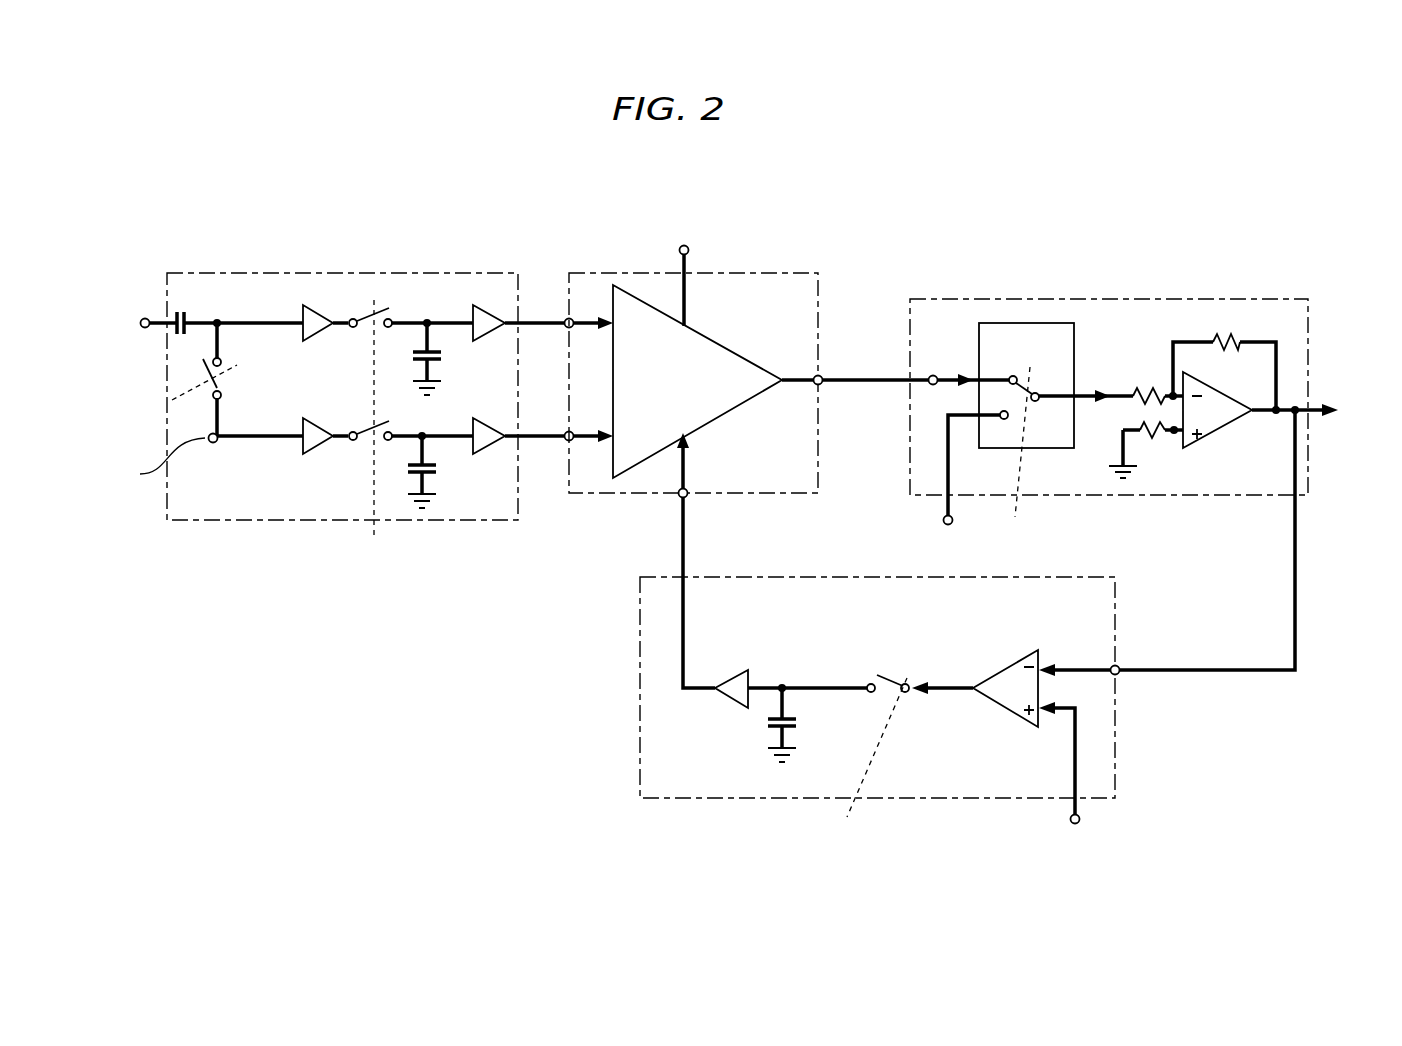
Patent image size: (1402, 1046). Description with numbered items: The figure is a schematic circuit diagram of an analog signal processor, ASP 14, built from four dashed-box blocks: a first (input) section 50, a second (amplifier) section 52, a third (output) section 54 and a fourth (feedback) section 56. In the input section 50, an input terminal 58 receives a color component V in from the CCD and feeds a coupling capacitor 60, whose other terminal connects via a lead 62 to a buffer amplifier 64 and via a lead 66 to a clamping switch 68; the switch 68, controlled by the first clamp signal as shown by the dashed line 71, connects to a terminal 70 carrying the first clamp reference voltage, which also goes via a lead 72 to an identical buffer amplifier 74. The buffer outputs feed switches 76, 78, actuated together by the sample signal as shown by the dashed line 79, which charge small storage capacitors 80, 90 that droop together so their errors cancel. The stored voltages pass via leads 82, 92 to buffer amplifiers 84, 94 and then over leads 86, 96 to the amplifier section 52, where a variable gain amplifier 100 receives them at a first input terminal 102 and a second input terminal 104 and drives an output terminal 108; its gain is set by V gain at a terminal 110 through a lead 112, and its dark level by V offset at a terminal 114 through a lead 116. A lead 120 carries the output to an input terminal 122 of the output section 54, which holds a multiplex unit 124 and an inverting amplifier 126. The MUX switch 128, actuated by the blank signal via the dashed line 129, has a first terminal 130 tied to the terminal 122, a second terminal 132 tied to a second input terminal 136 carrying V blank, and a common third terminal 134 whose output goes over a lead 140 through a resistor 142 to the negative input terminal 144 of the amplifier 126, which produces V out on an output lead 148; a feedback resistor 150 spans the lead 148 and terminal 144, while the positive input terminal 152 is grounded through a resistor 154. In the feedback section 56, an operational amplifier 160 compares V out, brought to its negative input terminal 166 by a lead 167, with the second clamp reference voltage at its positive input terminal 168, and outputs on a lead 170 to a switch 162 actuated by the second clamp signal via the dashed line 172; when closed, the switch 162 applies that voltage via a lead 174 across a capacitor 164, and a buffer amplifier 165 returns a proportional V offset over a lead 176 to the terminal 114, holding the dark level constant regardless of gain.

The analog signal processor 14 is at (474, 166).
The first (input) section 50 is at (222, 273).
The second (amplifier) section 52 is at (808, 273).
The third (output) section 54 is at (1080, 299).
The fourth (feedback) section 56 is at (1118, 623).
The input terminal 58 is at (142, 316).
The coupling capacitor 60 is at (184, 312).
The lead 62 is at (275, 320).
The buffer amplifier 64 is at (316, 305).
The lead 66 is at (222, 340).
The clamping switch 68 is at (223, 383).
The terminal 70 is at (213, 444).
The dashed line 71 is at (234, 366).
The lead 72 is at (263, 440).
The buffer amplifier 74 is at (316, 420).
The switch 76 is at (389, 306).
The switch 78 is at (388, 420).
The dashed line 79 is at (374, 363).
The storage capacitor 80 is at (441, 356).
The lead 82 is at (445, 318).
The buffer amplifier 84 is at (487, 305).
The lead 86 is at (535, 321).
The storage capacitor 90 is at (436, 470).
The lead 92 is at (450, 433).
The buffer amplifier 94 is at (491, 434).
The lead 96 is at (545, 440).
The variable gain amplifier 100 is at (752, 364).
The first input terminal 102 is at (571, 318).
The second input terminal 104 is at (571, 442).
The output terminal 108 is at (822, 377).
The terminal 110 is at (690, 251).
The lead 112 is at (686, 290).
The terminal 114 is at (686, 496).
The lead 116 is at (680, 487).
The lead 120 is at (855, 385).
The input terminal 122 is at (933, 375).
The multiplex (MUX) unit 124 is at (1003, 323).
The inverting amplifier 126 is at (1215, 440).
The single pole double throw switch 128 is at (1030, 392).
The dashed line 129 is at (1040, 418).
The first terminal 130 is at (1010, 378).
The second terminal 132 is at (1000, 414).
The common third terminal 134 is at (1040, 396).
The second input terminal 136 is at (944, 520).
The lead 140 is at (1125, 392).
The resistor 142 is at (1162, 393).
The negative (−) input terminal 144 is at (1171, 385).
The output lead 148 is at (1277, 402).
The feedback resistor 150 is at (1230, 340).
The positive (+) input terminal 152 is at (1178, 445).
The resistor 154 is at (1152, 445).
The operational amplifier (OAMP) 160 is at (1000, 670).
The switch 162 is at (876, 692).
The capacitor 164 is at (770, 746).
The buffer amplifier 165 is at (725, 708).
The negative (−) input terminal 166 is at (1112, 667).
The lead 167 is at (1293, 655).
The positive (+) input terminal 168 is at (1080, 819).
The lead 170 is at (956, 692).
The dashed line 172 is at (900, 670).
The lead 174 is at (820, 686).
The lead 176 is at (686, 645).